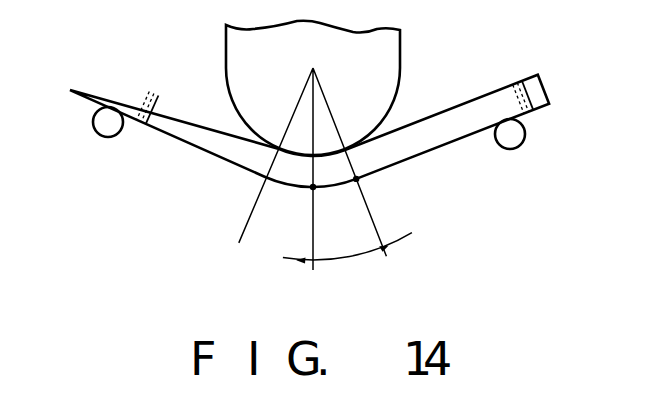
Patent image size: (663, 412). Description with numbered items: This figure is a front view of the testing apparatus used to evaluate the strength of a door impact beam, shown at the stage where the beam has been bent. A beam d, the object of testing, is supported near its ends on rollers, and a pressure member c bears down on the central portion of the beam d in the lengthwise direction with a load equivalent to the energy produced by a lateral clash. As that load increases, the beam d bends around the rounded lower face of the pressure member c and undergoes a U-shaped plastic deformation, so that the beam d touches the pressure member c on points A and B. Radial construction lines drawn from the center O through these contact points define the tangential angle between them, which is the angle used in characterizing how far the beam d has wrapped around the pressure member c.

The pressure member c is at (400, 54).
The beam d is at (447, 108).
The center of curvature O is at (313, 163).
The point A is at (367, 189).
The point B is at (300, 202).